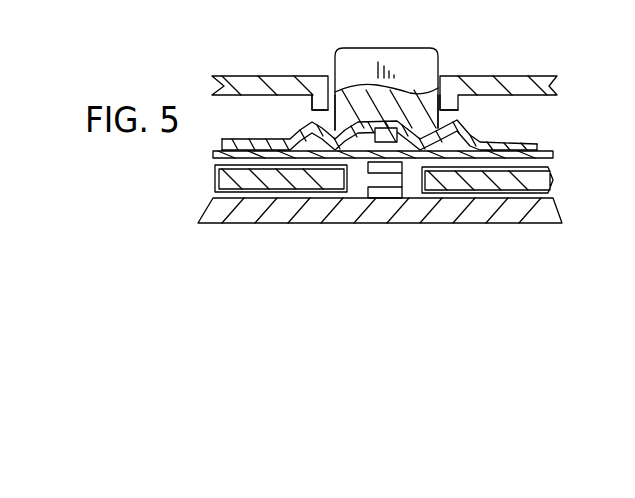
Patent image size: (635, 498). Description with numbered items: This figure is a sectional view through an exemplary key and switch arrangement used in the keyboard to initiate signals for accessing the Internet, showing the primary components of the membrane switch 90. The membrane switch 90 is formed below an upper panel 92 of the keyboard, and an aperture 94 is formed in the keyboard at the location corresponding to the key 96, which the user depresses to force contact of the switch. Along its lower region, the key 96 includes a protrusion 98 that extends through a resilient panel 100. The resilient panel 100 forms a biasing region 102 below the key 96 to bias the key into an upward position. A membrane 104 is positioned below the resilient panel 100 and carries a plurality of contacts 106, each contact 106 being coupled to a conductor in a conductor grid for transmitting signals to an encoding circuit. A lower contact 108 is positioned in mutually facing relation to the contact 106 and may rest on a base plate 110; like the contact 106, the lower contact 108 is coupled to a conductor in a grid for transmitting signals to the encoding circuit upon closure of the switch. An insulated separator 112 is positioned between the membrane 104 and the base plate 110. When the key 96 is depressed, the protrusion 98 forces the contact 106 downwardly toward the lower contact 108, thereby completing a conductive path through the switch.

The membrane switch 90 is at (493, 129).
The upper panel 92 is at (532, 84).
The aperture 94 is at (452, 100).
The key 96 is at (402, 60).
The protrusion 98 is at (393, 100).
The resilient panel 100 is at (517, 138).
The biasing region 102 is at (440, 116).
The membrane 104 is at (320, 150).
The contact 106 is at (390, 169).
The lower contact 108 is at (380, 194).
The base plate 110 is at (523, 213).
The insulated separator 112 is at (213, 179).